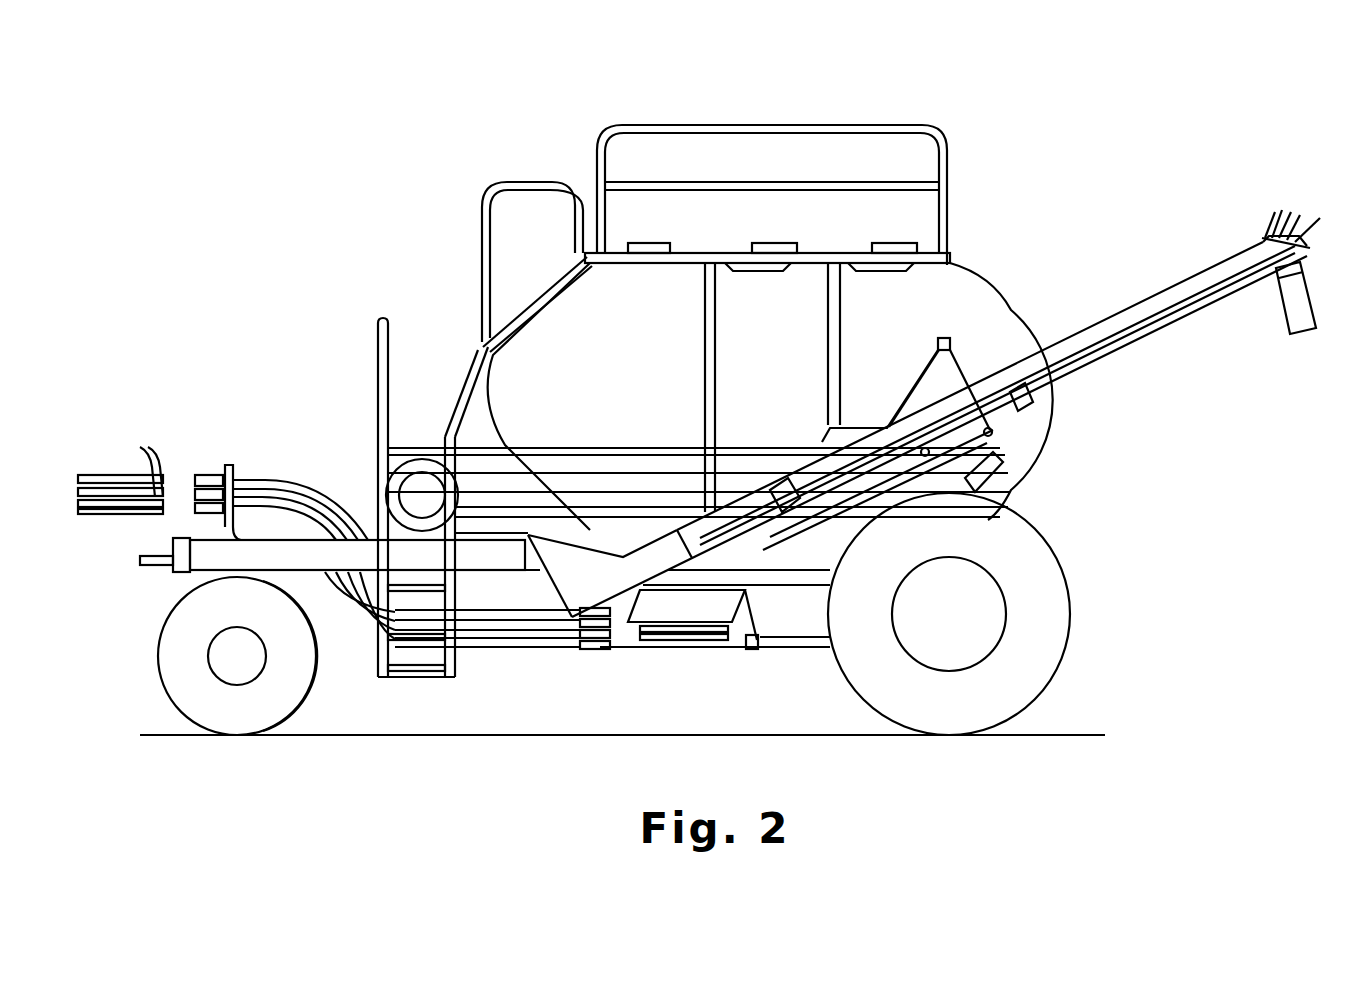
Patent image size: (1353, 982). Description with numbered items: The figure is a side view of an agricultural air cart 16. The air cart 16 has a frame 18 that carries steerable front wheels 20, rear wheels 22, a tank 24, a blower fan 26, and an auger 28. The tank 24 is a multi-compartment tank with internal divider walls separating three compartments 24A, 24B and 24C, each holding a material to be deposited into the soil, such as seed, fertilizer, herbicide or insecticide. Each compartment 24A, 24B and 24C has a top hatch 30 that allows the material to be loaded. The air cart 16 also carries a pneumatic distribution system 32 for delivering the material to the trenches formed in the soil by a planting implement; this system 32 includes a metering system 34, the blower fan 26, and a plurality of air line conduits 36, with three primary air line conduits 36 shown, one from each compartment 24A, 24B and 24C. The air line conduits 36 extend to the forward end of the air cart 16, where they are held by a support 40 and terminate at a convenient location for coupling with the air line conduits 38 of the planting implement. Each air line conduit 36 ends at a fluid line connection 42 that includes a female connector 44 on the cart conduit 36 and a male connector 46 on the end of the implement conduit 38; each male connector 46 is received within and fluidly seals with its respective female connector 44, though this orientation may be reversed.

The agricultural air cart 16 is at (1034, 170).
The frame 18 is at (363, 540).
The steerable front wheels 20 is at (303, 705).
The rear wheels 22 is at (1060, 654).
The tank 24 is at (782, 391).
The first compartment 24A is at (592, 336).
The second compartment 24B is at (785, 336).
The third compartment 24C is at (918, 336).
The blower fan 26 is at (393, 491).
The auger 28 is at (1232, 252).
The top hatch 30 is at (643, 243).
The pneumatic distribution system 32 is at (621, 666).
The metering system 34 is at (748, 672).
The air line conduits 36 is at (489, 615).
The air line conduits 38 is at (111, 489).
The support 40 is at (233, 467).
The fluid line connection 42 is at (284, 511).
The female connector 44 is at (194, 481).
The male connector 46 is at (133, 460).